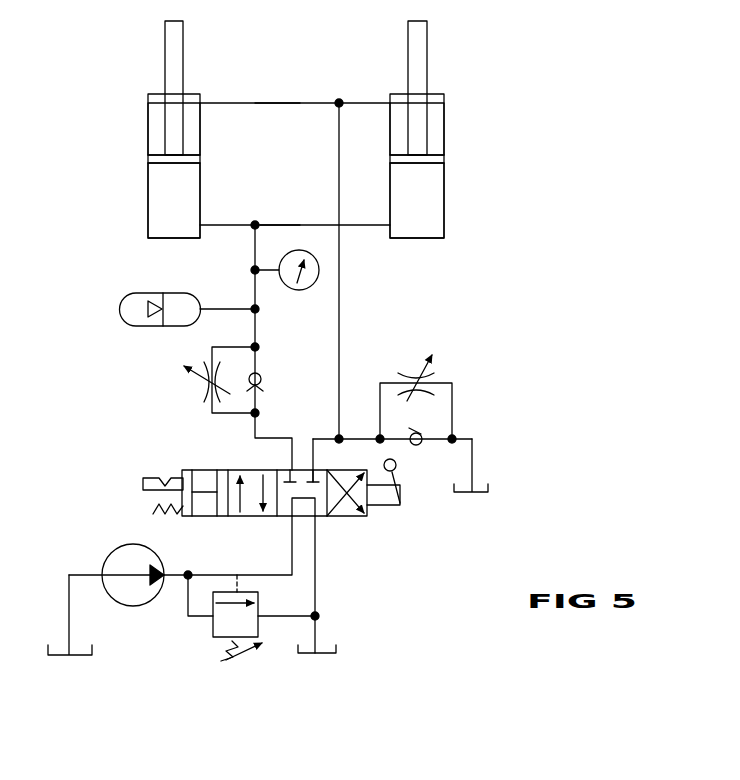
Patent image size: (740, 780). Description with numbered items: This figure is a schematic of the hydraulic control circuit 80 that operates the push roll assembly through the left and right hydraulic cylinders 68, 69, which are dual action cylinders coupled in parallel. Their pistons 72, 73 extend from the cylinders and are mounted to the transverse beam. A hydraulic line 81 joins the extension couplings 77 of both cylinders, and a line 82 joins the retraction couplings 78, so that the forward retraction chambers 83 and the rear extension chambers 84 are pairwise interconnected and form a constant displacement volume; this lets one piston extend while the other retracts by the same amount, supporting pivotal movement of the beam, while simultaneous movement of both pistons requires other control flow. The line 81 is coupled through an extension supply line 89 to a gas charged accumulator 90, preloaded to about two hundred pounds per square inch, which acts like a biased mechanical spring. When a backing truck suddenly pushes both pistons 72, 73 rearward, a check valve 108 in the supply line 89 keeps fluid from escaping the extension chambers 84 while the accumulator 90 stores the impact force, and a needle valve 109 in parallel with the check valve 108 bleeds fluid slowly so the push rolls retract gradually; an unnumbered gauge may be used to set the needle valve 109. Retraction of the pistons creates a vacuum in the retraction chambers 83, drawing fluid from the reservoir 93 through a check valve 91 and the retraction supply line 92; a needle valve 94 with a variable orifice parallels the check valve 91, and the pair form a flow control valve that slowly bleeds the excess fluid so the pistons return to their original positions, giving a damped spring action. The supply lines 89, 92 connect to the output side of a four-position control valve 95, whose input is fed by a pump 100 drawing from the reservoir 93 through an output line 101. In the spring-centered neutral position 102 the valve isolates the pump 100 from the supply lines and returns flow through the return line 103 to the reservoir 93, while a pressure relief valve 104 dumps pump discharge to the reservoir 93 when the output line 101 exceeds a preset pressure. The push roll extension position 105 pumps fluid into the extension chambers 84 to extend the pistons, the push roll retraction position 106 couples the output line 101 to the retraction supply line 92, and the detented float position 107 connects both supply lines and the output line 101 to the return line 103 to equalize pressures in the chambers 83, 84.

The left hydraulic cylinder 68 is at (148, 182).
The right hydraulic cylinder 69 is at (444, 182).
The left piston 72 is at (183, 43).
The right piston 73 is at (428, 47).
The extension coupling 77 is at (203, 225).
The retraction coupling 78 is at (203, 103).
The hydraulic control circuit 80 is at (524, 258).
The hydraulic line 81 is at (280, 224).
The line 82 is at (268, 105).
The retraction chamber 83 is at (157, 125).
The extension chamber 84 is at (157, 216).
The extension supply line 89 is at (253, 290).
The accumulator 90 is at (133, 326).
The check valve 91 is at (421, 444).
The retraction supply line 92 is at (341, 300).
The reservoir 93 is at (62, 650).
The needle valve 94 is at (434, 361).
The control valve 95 is at (444, 506).
The pump 100 is at (113, 553).
The output line 101 is at (283, 573).
The neutral position 102 is at (318, 519).
The return line 103 is at (317, 582).
The pressure relief valve 104 is at (220, 638).
The push roll extension position 105 is at (232, 517).
The push roll retraction position 106 is at (352, 518).
The float position 107 is at (176, 459).
The check valve 108 is at (261, 376).
The needle valve 109 is at (200, 397).